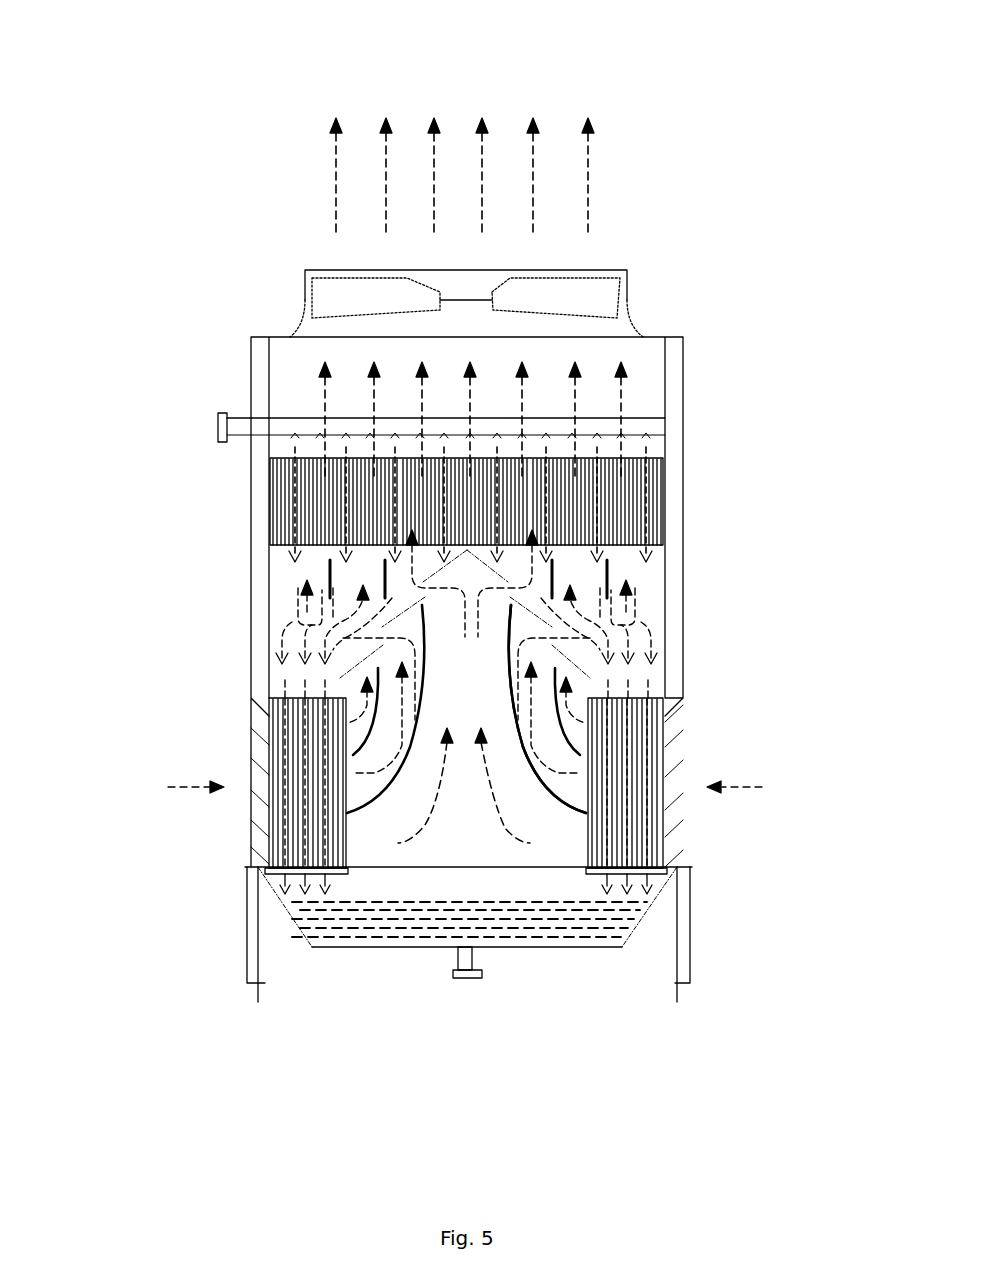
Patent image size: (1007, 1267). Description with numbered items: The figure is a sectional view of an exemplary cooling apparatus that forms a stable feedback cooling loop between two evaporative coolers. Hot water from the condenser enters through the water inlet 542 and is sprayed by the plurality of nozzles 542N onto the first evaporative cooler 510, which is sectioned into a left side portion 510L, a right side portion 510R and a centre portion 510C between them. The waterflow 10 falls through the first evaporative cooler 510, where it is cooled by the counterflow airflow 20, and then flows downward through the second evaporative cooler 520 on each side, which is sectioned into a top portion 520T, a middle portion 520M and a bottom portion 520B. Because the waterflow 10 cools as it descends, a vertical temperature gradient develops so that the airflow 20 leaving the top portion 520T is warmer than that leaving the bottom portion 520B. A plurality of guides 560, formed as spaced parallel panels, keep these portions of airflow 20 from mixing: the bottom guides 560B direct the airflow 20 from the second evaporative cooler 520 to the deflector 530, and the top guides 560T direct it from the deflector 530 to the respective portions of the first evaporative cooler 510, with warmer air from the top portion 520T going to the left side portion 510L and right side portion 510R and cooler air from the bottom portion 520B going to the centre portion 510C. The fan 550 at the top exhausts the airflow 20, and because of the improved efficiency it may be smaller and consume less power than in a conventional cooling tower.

The waterflow 10 is at (295, 626).
The airflow 20 is at (495, 817).
The first evaporative cooler 510 is at (482, 504).
The left side portion 510L is at (287, 518).
The centre portion 510C is at (488, 504).
The right side portion 510R is at (637, 505).
The second evaporative cooler 520 is at (647, 812).
The top portion 520T is at (240, 727).
The middle portion 520M is at (238, 807).
The bottom portion 520B is at (240, 843).
The deflector 530 is at (560, 668).
The water inlet 542 is at (218, 425).
The nozzles 542N is at (292, 437).
The fan 550 is at (328, 298).
The guides 560 is at (562, 818).
The top guides 560T is at (330, 578).
The bottom guides 560B is at (557, 717).